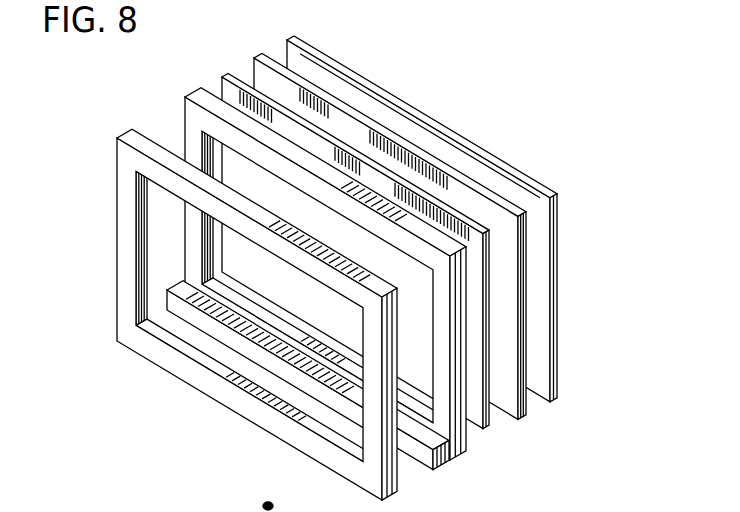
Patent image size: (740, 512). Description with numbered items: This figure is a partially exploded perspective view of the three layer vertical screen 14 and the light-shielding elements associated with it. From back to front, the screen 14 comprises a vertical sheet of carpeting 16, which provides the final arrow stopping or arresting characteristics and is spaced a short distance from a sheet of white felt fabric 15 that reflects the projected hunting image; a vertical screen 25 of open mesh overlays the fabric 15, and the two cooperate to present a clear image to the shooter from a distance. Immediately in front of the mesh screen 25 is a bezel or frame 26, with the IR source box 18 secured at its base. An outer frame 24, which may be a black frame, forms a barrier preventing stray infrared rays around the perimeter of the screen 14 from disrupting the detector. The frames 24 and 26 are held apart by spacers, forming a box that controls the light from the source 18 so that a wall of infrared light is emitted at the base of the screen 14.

The screen 14 is at (543, 121).
The sheet of white felt fabric 15 is at (523, 420).
The sheet of carpeting 16 is at (556, 330).
The IR source box 18 is at (422, 458).
The outer frame 24 is at (202, 385).
The mesh screen 25 is at (475, 428).
The frame 26 is at (192, 112).